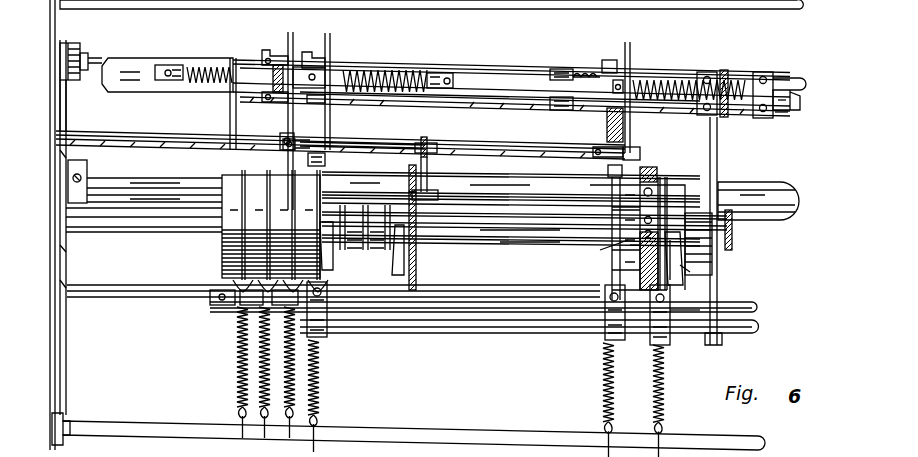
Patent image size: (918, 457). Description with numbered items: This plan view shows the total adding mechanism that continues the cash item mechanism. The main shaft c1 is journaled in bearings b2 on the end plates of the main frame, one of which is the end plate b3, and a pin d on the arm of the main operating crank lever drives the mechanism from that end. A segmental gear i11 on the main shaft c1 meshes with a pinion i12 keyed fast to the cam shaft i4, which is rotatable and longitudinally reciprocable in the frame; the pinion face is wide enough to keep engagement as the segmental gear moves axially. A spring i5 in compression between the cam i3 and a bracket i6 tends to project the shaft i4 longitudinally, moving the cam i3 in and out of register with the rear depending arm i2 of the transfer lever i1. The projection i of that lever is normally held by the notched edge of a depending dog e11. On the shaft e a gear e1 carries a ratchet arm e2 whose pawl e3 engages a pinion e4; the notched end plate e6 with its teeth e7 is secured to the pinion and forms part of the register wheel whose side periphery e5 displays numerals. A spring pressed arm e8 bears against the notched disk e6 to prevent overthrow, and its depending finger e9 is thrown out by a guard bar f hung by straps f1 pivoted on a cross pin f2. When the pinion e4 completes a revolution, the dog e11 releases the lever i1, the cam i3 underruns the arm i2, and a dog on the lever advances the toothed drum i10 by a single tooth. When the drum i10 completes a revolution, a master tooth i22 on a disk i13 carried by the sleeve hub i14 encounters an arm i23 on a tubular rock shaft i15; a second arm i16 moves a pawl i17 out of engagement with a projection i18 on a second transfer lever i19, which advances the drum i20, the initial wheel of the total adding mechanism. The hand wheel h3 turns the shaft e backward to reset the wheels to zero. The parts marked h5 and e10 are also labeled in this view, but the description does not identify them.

The pinion i12 is at (76, 44).
The segmental gear i11 is at (68, 116).
The bearings b2 is at (66, 166).
The end plate b3 is at (57, 355).
The projection i is at (446, 87).
The second arm i16 is at (338, 152).
The second transfer lever i19 is at (283, 138).
The projection i18 is at (296, 138).
The tubular rock shaft i15 is at (363, 142).
The pawl i17 is at (325, 165).
The arm i23 is at (428, 158).
The master tooth i22 is at (430, 190).
The bracket i6 is at (560, 70).
The spring i5 is at (584, 70).
The cam i3 is at (608, 60).
The rear depending arm i2 is at (633, 61).
The transfer lever i1 is at (622, 134).
The cam shaft i4 is at (795, 78).
The roller h5 is at (787, 118).
The pin d is at (396, 209).
The disk i13 is at (416, 257).
The guard bar f is at (453, 320).
The cross pin f2 is at (152, 300).
The straps f1 is at (258, 310).
The drum i20 is at (325, 303).
The shaft e is at (565, 246).
The depending dog e11 is at (657, 167).
The teeth e7 is at (665, 178).
The notched end plate e6 is at (665, 210).
The pinion e4 is at (680, 220).
The pawl e3 is at (677, 286).
The gear e1 is at (712, 245).
The ratchet arm e2 is at (690, 272).
The hand wheel h3 is at (735, 262).
The shaft c1 is at (780, 190).
The bar e10 is at (620, 197).
The drum i10 is at (625, 243).
The sleeve hub i14 is at (505, 243).
The side periphery e5 is at (622, 338).
The depending finger e9 is at (660, 335).
The spring pressed arm e8 is at (672, 316).